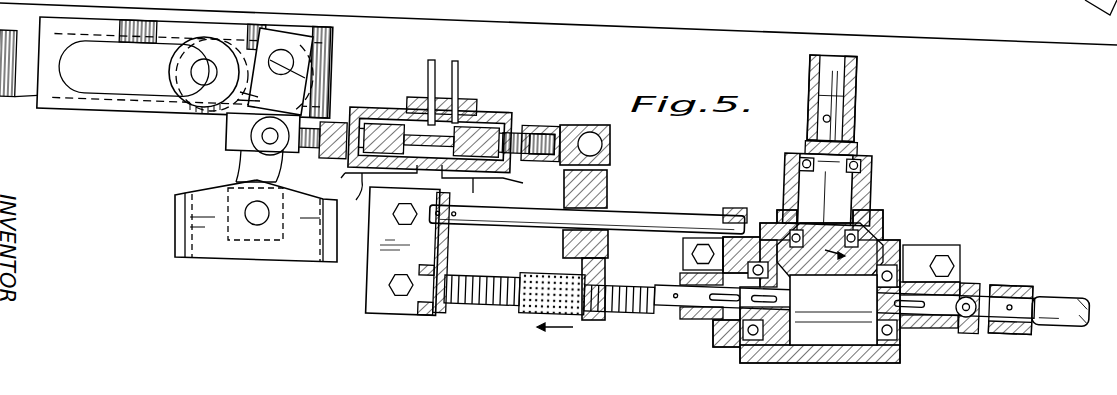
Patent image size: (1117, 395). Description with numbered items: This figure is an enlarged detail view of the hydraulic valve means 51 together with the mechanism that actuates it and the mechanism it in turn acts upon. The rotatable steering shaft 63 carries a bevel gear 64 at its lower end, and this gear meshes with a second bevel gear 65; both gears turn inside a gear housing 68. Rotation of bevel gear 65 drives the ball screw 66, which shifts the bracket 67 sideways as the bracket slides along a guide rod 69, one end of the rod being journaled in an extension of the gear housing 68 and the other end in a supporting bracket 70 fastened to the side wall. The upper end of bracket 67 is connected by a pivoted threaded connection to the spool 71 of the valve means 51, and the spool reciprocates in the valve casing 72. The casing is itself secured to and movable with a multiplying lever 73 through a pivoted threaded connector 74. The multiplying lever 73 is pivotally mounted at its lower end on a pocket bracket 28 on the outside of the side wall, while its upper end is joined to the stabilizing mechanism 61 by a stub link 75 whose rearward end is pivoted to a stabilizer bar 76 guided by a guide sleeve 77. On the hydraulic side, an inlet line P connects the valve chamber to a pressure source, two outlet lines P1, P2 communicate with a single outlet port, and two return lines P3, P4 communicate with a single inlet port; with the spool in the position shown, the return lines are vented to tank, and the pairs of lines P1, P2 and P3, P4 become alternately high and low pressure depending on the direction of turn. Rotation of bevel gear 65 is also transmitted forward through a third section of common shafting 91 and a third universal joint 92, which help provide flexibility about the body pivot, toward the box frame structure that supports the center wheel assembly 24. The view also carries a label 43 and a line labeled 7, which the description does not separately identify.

The center wheel assembly 24 is at (1060, 0).
The pocket bracket 28 is at (207, 258).
The drive shaft 43 is at (873, 303).
The valve means 51 is at (480, 88).
The stabilizing mechanism 61 is at (70, 112).
The steering shaft 63 is at (857, 70).
The bevel gear 64 is at (873, 262).
The bevel gear 65 is at (797, 311).
The ball screw 66 is at (623, 307).
The bracket 67 is at (610, 188).
The gear housing 68 is at (873, 190).
The guide rod 69 is at (670, 217).
The supporting bracket 70 is at (370, 280).
The spool 71 is at (513, 127).
The valve casing 72 is at (377, 98).
The multiplying lever 73 is at (240, 174).
The pivoted threaded connector 74 is at (307, 147).
The stub link 75 is at (168, 77).
The stabilizer bar 76 is at (20, 88).
The guide sleeve 77 is at (118, 108).
The conduit 7 is at (428, 67).
The inlet line P is at (460, 67).
The outlet line P1 is at (523, 183).
The outlet line P2 is at (473, 192).
The return line P3 is at (342, 178).
The return line P4 is at (356, 201).
The common shafting 91 is at (1068, 295).
The universal joint 92 is at (973, 283).